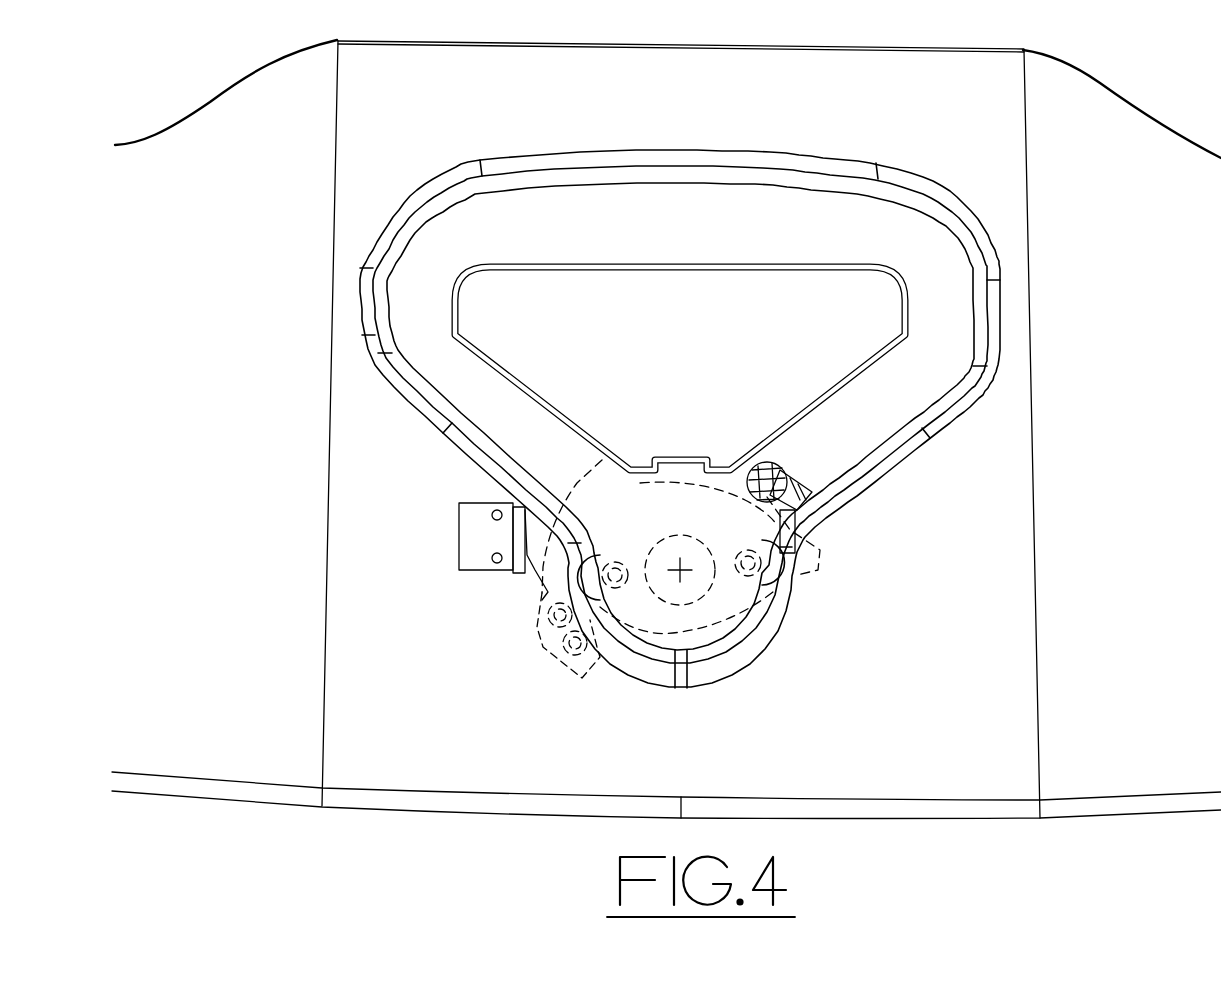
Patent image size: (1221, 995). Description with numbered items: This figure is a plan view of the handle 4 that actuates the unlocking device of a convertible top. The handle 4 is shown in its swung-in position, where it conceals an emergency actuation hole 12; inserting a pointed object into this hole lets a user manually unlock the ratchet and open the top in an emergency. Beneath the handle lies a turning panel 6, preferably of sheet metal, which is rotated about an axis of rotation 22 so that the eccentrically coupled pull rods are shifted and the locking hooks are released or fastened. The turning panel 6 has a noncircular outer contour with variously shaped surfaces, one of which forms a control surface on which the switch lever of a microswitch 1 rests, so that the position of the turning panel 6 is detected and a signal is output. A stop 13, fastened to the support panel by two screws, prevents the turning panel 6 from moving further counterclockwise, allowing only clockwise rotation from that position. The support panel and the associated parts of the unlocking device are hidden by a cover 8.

The cover 8 is at (398, 101).
The handle 4 is at (937, 342).
The microswitch 1 is at (470, 533).
The axis of rotation 22 is at (677, 575).
The turning panel 6 is at (719, 603).
The emergency actuation hole 12 is at (773, 487).
The stop 13 is at (545, 637).